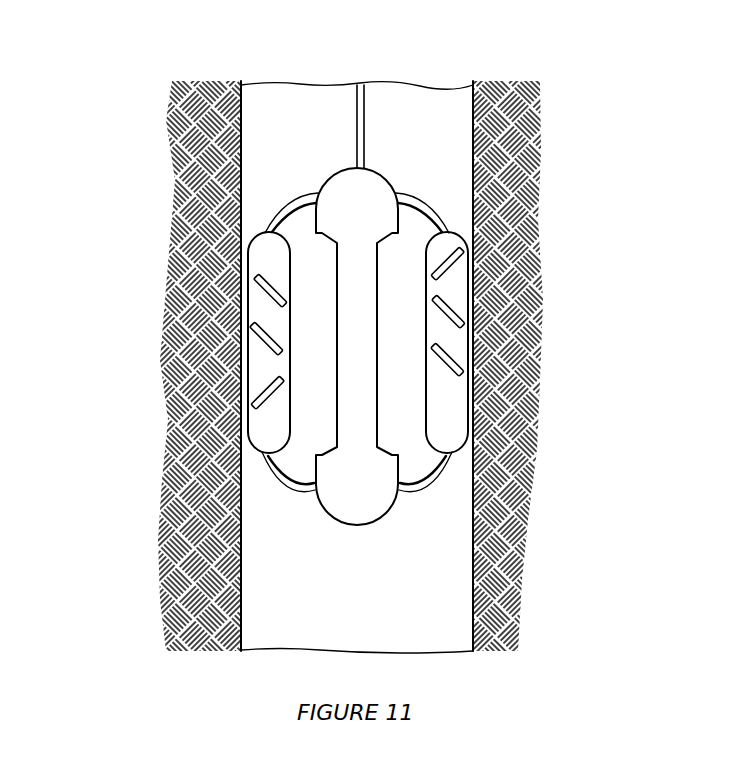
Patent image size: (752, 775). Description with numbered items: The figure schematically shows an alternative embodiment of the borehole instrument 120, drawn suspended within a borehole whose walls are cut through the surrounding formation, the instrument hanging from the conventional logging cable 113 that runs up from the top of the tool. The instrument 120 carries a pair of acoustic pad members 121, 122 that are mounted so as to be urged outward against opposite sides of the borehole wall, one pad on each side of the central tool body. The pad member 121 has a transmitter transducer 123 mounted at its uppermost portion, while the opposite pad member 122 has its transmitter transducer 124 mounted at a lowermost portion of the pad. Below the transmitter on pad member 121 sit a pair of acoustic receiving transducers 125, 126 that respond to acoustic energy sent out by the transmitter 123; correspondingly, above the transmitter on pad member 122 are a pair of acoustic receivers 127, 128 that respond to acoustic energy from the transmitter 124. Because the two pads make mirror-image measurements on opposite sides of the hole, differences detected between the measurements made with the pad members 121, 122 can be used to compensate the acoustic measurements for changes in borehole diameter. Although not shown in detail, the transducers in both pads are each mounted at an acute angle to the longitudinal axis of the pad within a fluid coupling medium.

The cable 113 is at (364, 133).
The borehole instrument 120 is at (379, 171).
The acoustic pad member 121 is at (456, 234).
The acoustic pad member 122 is at (260, 238).
The transmitter transducer 123 is at (452, 266).
The transmitter transducer 124 is at (266, 386).
The acoustic receiving transducer 125 is at (440, 300).
The acoustic receiving transducer 126 is at (440, 348).
The acoustic receiver 127 is at (266, 291).
The acoustic receiver 128 is at (262, 341).